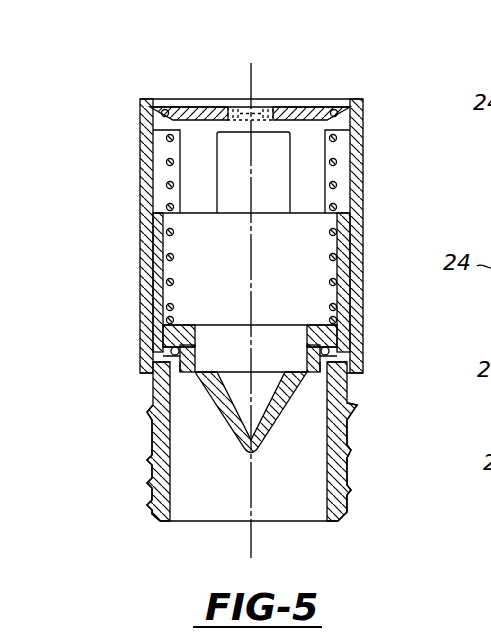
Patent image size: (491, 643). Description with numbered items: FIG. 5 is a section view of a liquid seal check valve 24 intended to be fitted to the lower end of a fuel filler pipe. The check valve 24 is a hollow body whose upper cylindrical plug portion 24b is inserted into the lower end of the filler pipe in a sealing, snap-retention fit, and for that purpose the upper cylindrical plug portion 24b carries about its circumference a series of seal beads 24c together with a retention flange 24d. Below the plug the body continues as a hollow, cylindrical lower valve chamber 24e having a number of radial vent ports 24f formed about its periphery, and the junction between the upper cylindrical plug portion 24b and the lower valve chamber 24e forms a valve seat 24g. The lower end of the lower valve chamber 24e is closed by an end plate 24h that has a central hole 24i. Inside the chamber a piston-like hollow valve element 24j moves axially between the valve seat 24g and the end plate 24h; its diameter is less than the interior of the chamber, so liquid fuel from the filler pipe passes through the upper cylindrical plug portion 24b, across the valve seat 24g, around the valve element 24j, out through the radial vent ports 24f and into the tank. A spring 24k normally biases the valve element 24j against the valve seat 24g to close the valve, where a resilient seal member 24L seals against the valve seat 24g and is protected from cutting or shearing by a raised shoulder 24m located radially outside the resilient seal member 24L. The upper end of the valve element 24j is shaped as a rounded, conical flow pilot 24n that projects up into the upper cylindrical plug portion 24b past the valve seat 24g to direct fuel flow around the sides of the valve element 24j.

The check valve 24 is at (126, 270).
The upper cylindrical plug portion 24b is at (345, 435).
The seal beads 24c is at (353, 477).
The retention flange 24d is at (146, 418).
The lower valve chamber 24e is at (357, 193).
The radial vent ports 24f is at (330, 158).
The valve seat 24g is at (347, 377).
The end plate 24h is at (218, 110).
The central hole 24i is at (266, 108).
The valve element 24j is at (310, 267).
The spring 24k is at (168, 141).
The resilient seal member 24L is at (178, 360).
The raised shoulder 24m is at (360, 353).
The flow pilot 24n is at (250, 452).